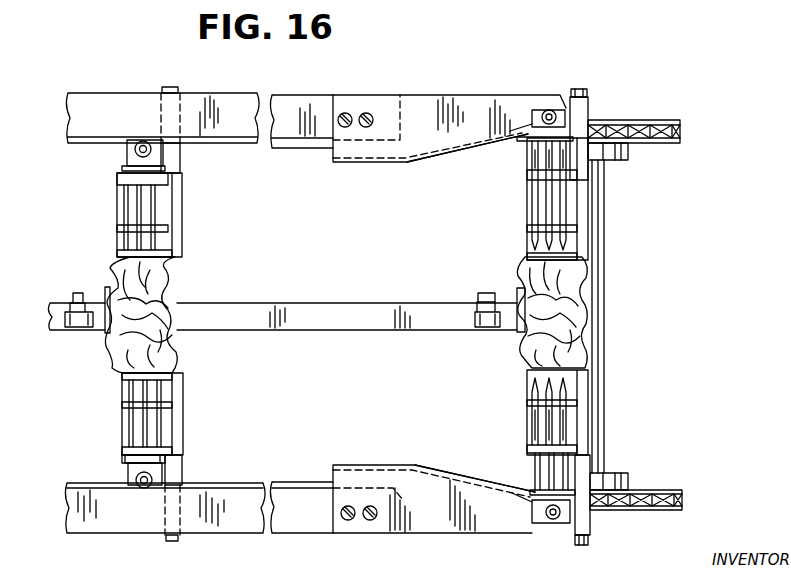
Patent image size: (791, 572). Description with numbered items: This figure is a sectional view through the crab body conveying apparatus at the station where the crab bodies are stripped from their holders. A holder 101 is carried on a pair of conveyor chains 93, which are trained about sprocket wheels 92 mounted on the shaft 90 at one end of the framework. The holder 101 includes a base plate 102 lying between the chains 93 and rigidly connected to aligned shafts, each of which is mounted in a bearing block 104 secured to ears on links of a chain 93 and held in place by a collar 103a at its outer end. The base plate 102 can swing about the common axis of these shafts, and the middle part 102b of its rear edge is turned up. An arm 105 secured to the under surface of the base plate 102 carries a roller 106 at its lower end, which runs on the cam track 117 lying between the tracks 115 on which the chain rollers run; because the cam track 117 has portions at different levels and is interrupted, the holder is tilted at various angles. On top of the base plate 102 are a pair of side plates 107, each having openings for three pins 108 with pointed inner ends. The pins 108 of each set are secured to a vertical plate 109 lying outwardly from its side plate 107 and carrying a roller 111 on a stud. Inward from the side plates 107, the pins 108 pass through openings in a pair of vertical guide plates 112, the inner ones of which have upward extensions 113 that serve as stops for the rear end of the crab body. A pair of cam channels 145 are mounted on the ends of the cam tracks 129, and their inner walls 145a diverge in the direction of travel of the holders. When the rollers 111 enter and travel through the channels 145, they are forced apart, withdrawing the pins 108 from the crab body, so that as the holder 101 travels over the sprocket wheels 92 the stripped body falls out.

The shaft 90 is at (600, 362).
The sprocket wheels 92 is at (678, 122).
The conveyor chains 93 is at (644, 145).
The holder 101 is at (190, 428).
The base plate 102 is at (175, 205).
The middle part of the rear edge of the plate 102b is at (123, 319).
The collars 103a is at (579, 90).
The bearing block 104 is at (180, 158).
The arm 105 is at (512, 300).
The roller 106 is at (80, 327).
The side plates 107 is at (122, 452).
The pins 108 is at (535, 210).
The vertical plate 109 is at (122, 168).
The roller 111 is at (141, 141).
The vertical guide plates 112 is at (168, 229).
The upward extensions 113 is at (180, 257).
The tracks 115 is at (296, 143).
The cam track 117 is at (302, 303).
The cam tracks 129 is at (308, 100).
The cam channels 145 is at (450, 110).
The inner walls of the channels 145a is at (456, 160).